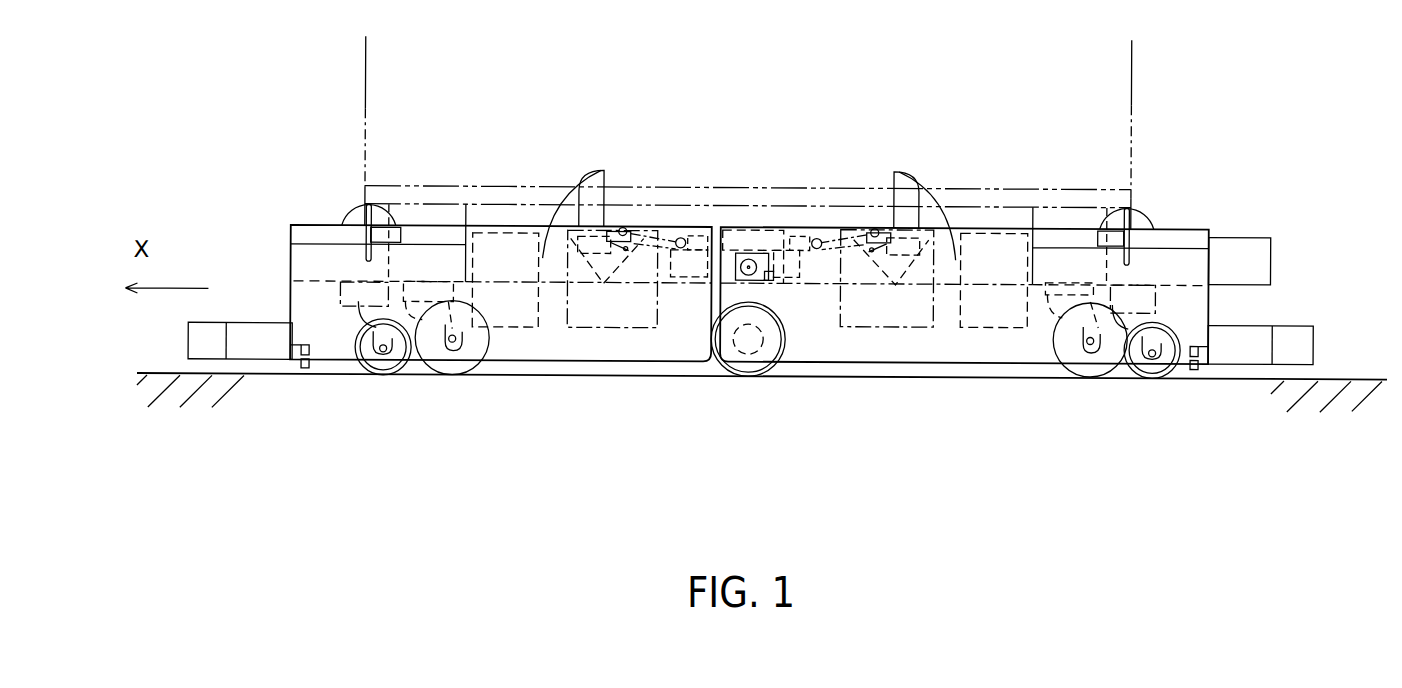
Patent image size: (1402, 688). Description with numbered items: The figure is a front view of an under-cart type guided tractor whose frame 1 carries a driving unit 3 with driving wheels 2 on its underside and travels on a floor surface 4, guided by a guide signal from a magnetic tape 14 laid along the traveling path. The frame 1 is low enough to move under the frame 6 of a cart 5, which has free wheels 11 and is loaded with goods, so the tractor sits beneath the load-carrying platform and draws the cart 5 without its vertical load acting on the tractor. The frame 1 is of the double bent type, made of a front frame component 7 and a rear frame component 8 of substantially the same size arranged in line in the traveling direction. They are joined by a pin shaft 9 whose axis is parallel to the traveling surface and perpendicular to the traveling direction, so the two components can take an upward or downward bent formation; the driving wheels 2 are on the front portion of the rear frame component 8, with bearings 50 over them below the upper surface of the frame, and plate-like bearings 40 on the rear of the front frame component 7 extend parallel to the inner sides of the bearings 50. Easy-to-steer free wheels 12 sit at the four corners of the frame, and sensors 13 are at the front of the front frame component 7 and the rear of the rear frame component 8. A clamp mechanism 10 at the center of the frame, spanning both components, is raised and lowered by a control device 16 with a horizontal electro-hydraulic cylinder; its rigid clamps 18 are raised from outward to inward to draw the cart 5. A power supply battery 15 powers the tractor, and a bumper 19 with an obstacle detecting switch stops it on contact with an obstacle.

The frame 1 is at (1223, 171).
The driving wheels 2 is at (742, 372).
The driving unit 3 is at (790, 389).
The floor surface 4 is at (1337, 362).
The cart 5 is at (1118, 48).
The frame of the cart 6 is at (629, 191).
The front frame component 7 is at (606, 345).
The rear frame component 8 is at (881, 359).
The pin shaft 9 is at (747, 248).
The clamp mechanism 10 is at (709, 206).
The free wheels 11 is at (453, 375).
The free wheels (universal casters) 12 is at (383, 375).
The sensors 13 is at (302, 367).
The magnetic tape 14 is at (1365, 394).
The power supply battery 15 is at (517, 313).
The control device 16 is at (792, 216).
The clamps 18 is at (588, 191).
The bumper 19 is at (208, 333).
The plate-like bearings 40 is at (669, 295).
The bearings 50 is at (820, 295).